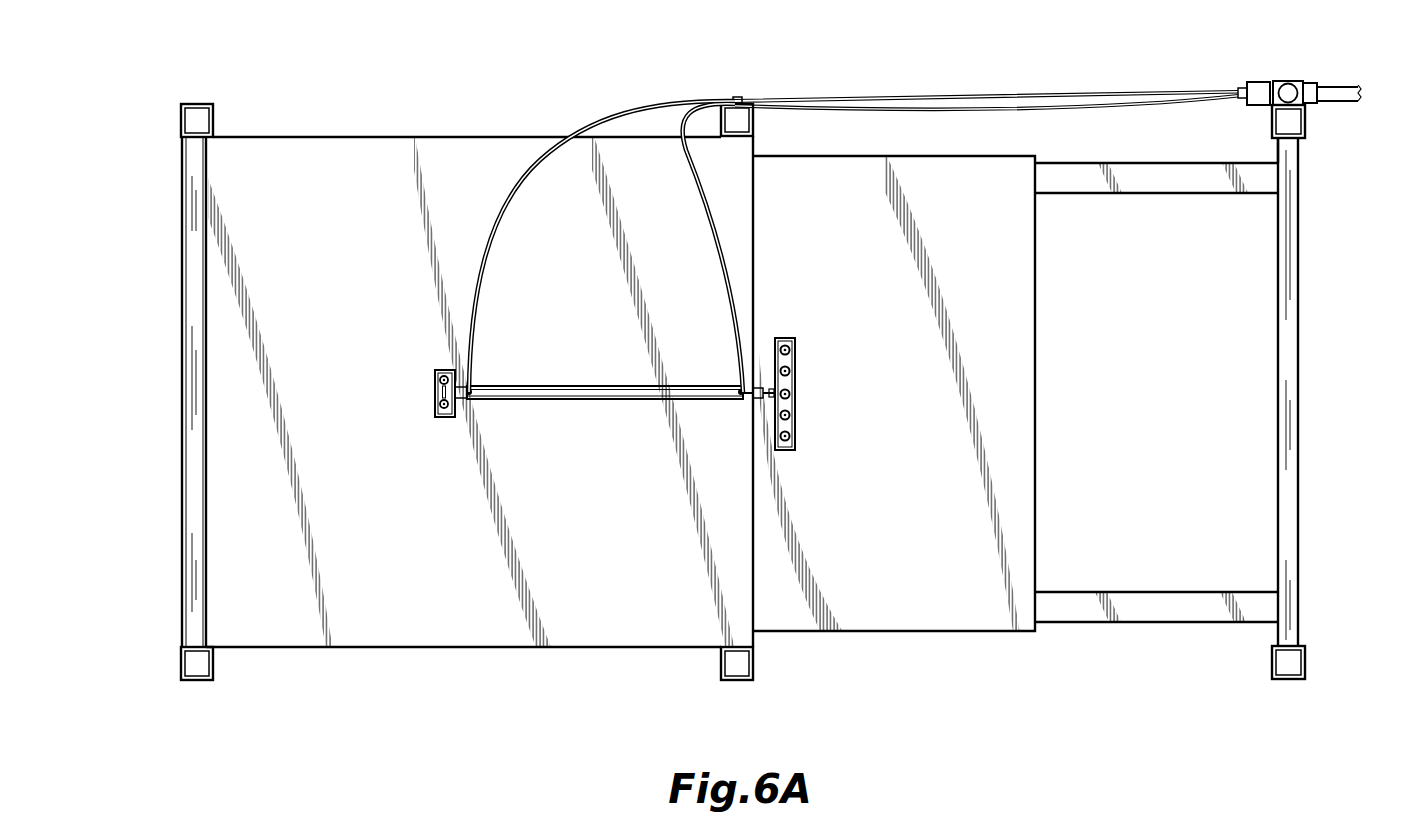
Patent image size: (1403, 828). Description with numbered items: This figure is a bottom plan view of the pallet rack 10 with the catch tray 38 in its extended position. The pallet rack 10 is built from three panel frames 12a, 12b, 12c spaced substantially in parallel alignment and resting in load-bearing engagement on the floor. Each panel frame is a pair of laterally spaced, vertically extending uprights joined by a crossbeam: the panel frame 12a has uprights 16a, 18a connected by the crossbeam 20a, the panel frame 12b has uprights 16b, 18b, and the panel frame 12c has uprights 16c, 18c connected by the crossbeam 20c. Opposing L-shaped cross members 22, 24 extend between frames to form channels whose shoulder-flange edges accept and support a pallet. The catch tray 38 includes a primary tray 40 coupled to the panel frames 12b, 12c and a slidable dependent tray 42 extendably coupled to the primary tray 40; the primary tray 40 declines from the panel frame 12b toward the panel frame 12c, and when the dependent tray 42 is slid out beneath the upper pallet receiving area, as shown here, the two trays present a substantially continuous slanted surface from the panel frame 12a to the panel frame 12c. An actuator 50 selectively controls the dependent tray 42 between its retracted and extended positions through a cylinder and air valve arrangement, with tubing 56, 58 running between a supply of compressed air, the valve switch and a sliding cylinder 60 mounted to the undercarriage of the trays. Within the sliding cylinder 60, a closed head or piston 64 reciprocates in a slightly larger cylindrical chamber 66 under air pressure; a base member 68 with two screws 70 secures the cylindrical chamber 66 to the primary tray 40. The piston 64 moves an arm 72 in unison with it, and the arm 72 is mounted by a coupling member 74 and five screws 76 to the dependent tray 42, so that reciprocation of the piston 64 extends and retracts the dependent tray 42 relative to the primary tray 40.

The pallet rack 10 is at (792, 395).
The panel frame 12a is at (1310, 123).
The panel frame 12b is at (757, 122).
The panel frame 12c is at (218, 119).
The upright 16a is at (1298, 80).
The upright 16b is at (742, 96).
The upright 16c is at (197, 103).
The upright 18a is at (1288, 681).
The upright 18b is at (733, 682).
The upright 18c is at (196, 682).
The crossbeam 20a is at (1280, 427).
The crossbeam 20c is at (205, 423).
The cross member 22 is at (1150, 194).
The cross member 24 is at (1172, 594).
The catch tray 38 is at (333, 570).
The primary tray 40 is at (479, 435).
The slidable dependent tray 42 is at (1037, 372).
The actuator 50 is at (1280, 81).
The tubing 56 is at (1340, 88).
The tubing 58 is at (990, 104).
The sliding cylinder 60 is at (517, 385).
The piston 64 is at (758, 392).
The cylindrical chamber 66 is at (604, 385).
The base member 68 is at (435, 404).
The screw 70 is at (435, 388).
The arm 72 is at (777, 426).
The coupling member 74 is at (787, 349).
The screw 76 is at (790, 394).